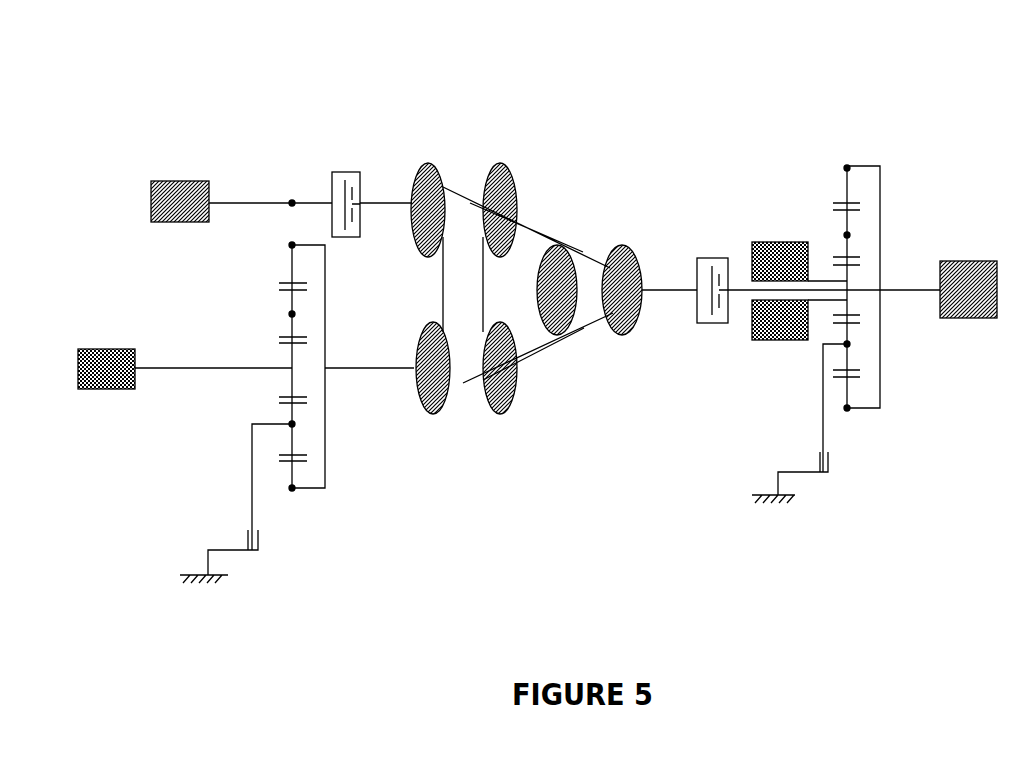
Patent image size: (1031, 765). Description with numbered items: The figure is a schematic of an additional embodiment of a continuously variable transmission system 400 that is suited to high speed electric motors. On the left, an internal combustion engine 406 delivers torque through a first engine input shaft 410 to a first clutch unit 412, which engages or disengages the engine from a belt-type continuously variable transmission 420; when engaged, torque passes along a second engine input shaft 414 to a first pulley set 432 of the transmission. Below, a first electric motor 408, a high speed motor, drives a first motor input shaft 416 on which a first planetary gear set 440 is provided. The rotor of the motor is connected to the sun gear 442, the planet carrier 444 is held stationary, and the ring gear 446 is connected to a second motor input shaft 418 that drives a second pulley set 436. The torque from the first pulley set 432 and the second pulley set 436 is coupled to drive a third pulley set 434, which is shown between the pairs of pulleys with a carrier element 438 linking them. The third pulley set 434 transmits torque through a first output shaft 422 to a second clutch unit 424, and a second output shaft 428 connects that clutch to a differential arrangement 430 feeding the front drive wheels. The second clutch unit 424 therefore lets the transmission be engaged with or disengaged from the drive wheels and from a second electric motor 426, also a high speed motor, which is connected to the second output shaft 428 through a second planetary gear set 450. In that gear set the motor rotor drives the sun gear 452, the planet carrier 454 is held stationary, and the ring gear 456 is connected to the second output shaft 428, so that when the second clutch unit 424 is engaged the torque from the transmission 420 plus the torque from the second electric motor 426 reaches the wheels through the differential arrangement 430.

The continuously variable transmission system 400 is at (728, 80).
The internal combustion engine 406 is at (180, 172).
The first electric motor 408 is at (110, 394).
The first engine input shaft 410 is at (251, 192).
The first clutch unit 412 is at (339, 166).
The second engine input shaft 414 is at (384, 197).
The first motor input shaft 416 is at (210, 376).
The second motor input shaft 418 is at (363, 377).
The belt-type continuously variable transmission 420 is at (537, 280).
The first output shaft 422 is at (665, 306).
The second clutch unit 424 is at (712, 256).
The second electric motor 426 is at (772, 240).
The second output shaft 428 is at (898, 282).
The differential arrangement 430 is at (961, 258).
The first pulley set 432 is at (477, 164).
The third pulley set 434 is at (594, 350).
The second pulley set 436 is at (459, 418).
The carrier 438 is at (440, 285).
The first planetary gear set 440 is at (277, 269).
The sun gear 442 is at (306, 376).
The planet carrier 444 is at (299, 430).
The ring gear 446 is at (298, 493).
The second planetary gear set 450 is at (866, 148).
The sun gear 452 is at (858, 300).
The planet carrier 454 is at (856, 356).
The ring gear 456 is at (847, 416).